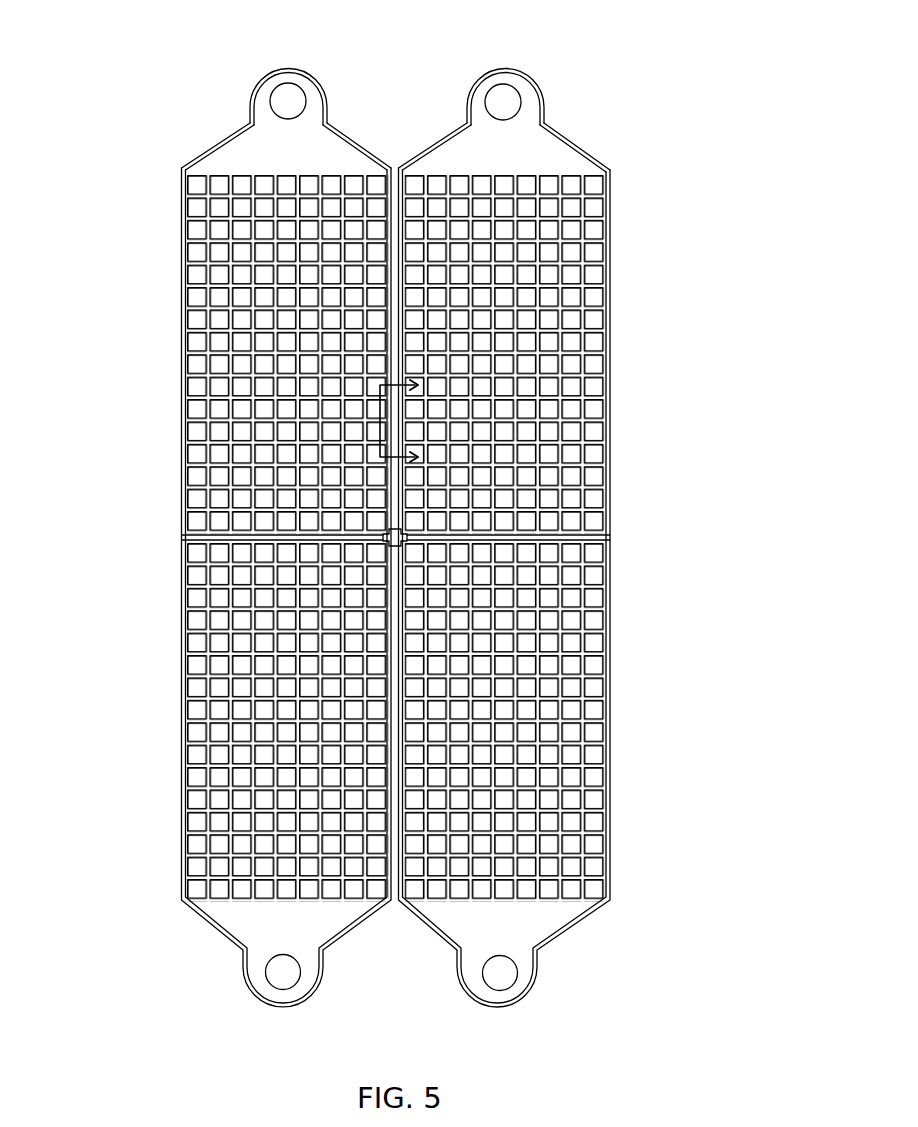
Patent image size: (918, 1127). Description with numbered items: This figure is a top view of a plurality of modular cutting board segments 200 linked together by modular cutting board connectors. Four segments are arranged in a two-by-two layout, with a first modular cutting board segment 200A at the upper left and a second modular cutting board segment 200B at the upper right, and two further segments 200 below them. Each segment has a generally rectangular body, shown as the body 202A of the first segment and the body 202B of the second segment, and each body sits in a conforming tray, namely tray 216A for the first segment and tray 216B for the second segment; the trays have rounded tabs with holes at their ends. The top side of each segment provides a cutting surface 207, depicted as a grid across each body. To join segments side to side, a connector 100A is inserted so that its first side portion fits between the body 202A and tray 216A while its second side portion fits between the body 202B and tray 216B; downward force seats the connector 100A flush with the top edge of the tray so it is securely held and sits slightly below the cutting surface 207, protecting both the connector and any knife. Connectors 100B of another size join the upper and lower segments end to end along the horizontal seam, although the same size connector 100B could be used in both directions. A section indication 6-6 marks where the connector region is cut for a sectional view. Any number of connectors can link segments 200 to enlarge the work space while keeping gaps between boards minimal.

The cutting board segment 200 is at (395, 507).
The first modular cutting board segment 200A is at (229, 510).
The second modular cutting board segment 200B is at (561, 507).
The tray of first modular cutting board segment 216A is at (199, 152).
The tray of second modular cutting board segment 216B is at (577, 142).
The body of first modular cutting board segment 202A is at (189, 170).
The body of second modular cutting board segment 202B is at (580, 175).
The cutting surface 207 is at (213, 240).
The connector 100A is at (394, 177).
The connector 100B is at (182, 537).
The section line 6-6 is at (398, 383).